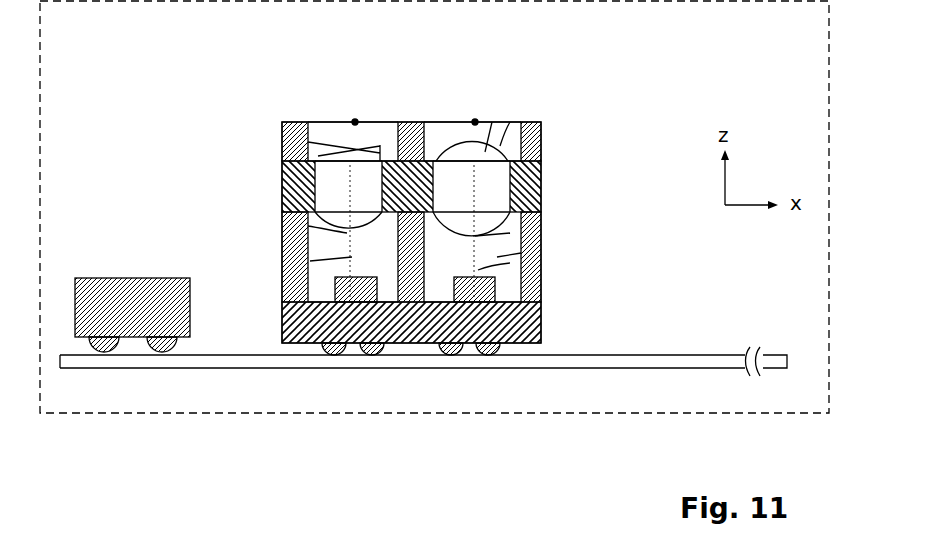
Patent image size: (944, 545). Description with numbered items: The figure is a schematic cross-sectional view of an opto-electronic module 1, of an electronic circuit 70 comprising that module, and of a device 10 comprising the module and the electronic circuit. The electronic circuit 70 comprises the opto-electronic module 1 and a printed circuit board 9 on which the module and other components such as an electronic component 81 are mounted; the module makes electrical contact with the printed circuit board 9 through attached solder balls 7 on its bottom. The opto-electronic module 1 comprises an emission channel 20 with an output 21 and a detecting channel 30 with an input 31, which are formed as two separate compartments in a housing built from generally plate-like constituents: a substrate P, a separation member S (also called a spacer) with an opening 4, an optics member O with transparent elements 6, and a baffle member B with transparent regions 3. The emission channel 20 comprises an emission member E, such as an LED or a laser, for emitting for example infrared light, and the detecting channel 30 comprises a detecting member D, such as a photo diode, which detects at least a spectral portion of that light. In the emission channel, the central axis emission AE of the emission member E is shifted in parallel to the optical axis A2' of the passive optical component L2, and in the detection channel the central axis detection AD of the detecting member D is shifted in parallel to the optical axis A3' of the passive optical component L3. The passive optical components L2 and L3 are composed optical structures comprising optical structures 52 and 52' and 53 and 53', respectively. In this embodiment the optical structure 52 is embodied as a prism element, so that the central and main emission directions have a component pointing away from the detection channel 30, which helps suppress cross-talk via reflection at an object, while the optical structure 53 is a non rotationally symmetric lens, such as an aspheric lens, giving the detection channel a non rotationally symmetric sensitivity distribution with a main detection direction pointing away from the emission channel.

The opto-electronic module 1 is at (275, 74).
The transparent region 3 is at (320, 122).
The opening 4 is at (542, 242).
The transparent element 6 is at (453, 178).
The solder ball 7 is at (485, 352).
The printed circuit board 9 is at (697, 355).
The device 10 is at (797, 413).
The emission channel 20 is at (376, 97).
The output of emission channel 21 is at (356, 119).
The detecting channel 30 is at (471, 97).
The input of detecting channel 31 is at (477, 119).
The optical structure 52 is at (301, 156).
The optical structure 52' is at (284, 213).
The optical structure 53 is at (520, 101).
The optical structure 53' is at (548, 98).
The electronic circuit 70 is at (133, 102).
The electronic component 81 is at (88, 278).
The passive optical component L2 is at (342, 114).
The passive optical component L3 is at (448, 114).
The optical axis A2' is at (285, 250).
The optical axis A3' is at (566, 219).
The central axis emission AE is at (282, 283).
The central axis detection AD is at (542, 268).
The baffle member B is at (542, 149).
The optics member O is at (542, 182).
The separation member S is at (542, 284).
The substrate P is at (542, 333).
The emission member E is at (313, 346).
The detecting member D is at (431, 346).